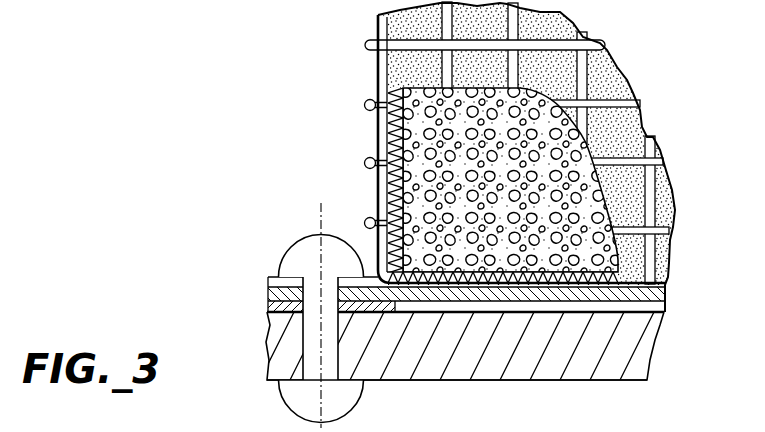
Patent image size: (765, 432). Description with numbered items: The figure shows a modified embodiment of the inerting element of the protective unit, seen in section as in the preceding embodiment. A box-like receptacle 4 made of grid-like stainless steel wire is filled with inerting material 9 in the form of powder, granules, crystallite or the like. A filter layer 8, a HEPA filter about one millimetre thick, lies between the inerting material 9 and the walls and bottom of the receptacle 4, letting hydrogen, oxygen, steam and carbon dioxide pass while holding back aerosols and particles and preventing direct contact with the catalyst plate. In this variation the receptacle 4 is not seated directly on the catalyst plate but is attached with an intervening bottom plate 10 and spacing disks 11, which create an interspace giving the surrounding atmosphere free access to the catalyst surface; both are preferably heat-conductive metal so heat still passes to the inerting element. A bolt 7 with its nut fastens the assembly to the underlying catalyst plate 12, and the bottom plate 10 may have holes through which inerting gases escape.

The receptacle 4 is at (580, 47).
The bolt 7 is at (312, 248).
The filter layer 8 is at (391, 140).
The inerting material 9 is at (558, 150).
The bottom plate 10 is at (268, 290).
The spacing disks 11 is at (268, 305).
The floor slab 12 is at (643, 305).